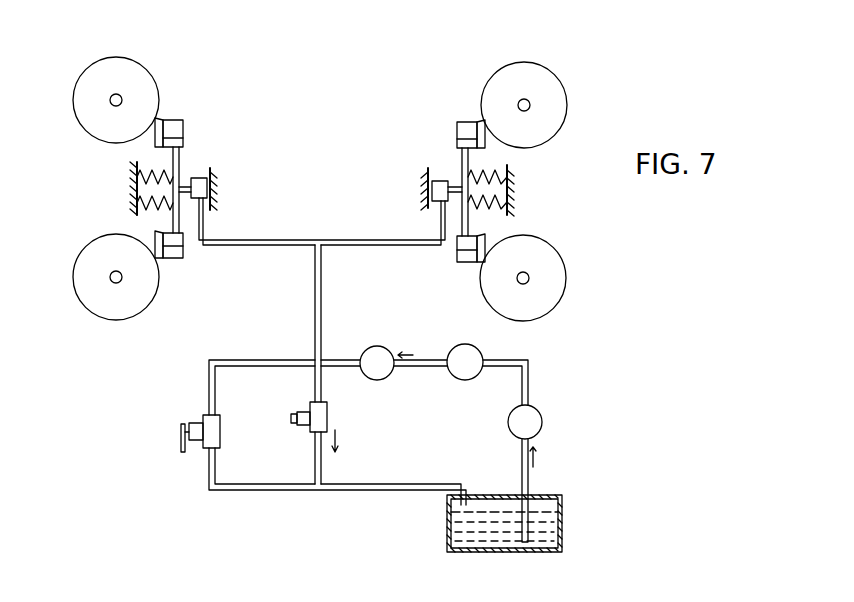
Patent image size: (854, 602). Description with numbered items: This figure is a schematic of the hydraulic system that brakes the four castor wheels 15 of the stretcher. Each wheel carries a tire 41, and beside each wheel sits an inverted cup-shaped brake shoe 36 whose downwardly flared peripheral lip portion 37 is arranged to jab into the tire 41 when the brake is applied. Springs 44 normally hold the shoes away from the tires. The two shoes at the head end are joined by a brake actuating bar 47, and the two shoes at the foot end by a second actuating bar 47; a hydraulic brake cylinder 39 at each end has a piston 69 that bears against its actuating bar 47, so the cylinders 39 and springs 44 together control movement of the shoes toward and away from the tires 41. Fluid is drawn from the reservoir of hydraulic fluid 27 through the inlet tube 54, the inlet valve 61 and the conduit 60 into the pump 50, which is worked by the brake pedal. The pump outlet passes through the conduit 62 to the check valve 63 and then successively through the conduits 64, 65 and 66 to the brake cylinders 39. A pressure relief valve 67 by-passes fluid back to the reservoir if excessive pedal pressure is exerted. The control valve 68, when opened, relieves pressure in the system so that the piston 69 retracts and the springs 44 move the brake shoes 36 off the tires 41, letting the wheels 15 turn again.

The wheels 15 is at (83, 80).
The tire 41 is at (153, 77).
The brake shoes 36 is at (163, 123).
The flared peripheral lip portion 37 is at (158, 110).
The hydraulic brake cylinders 39 is at (202, 178).
The springs 44 is at (137, 188).
The brake actuating bar 47 is at (173, 220).
The piston 69 is at (455, 187).
The conduit 66 is at (300, 240).
The conduit 65 is at (315, 282).
The conduit 64 is at (343, 360).
The check valve 63 is at (380, 346).
The conduit 62 is at (440, 366).
The pump 50 is at (480, 353).
The conduit 60 is at (528, 383).
The inlet valve 61 is at (542, 420).
The inlet tube 54 is at (528, 483).
The hydraulic fluid 27 is at (550, 533).
The control valve 68 is at (220, 437).
The pressure relief valve 67 is at (327, 410).